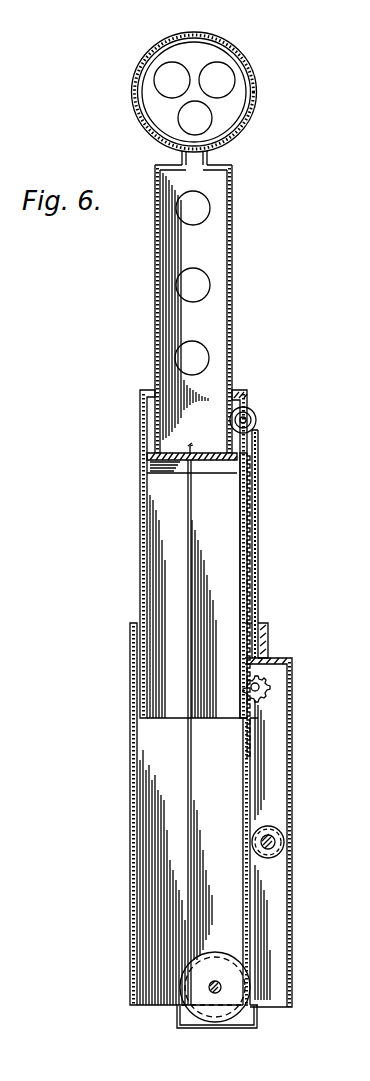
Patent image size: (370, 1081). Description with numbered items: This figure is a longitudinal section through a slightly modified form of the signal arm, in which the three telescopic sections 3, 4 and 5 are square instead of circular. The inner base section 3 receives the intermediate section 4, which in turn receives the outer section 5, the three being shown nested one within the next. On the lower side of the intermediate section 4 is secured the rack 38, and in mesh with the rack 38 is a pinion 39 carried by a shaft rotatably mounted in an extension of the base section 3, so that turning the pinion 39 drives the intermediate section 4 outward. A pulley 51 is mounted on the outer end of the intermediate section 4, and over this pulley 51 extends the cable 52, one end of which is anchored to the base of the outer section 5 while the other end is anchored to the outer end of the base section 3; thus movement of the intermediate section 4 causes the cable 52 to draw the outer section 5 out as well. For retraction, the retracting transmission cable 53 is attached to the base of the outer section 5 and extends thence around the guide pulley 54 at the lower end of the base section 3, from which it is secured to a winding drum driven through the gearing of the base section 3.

The base section 3 is at (130, 818).
The intermediate section 4 is at (140, 555).
The outer section 5 is at (155, 290).
The rack 38 is at (247, 538).
The pinion 39 is at (266, 686).
The pulley 51 is at (252, 417).
The cable 52 is at (258, 503).
The retracting transmission cable 53 is at (188, 600).
The guide pulley 54 is at (183, 996).